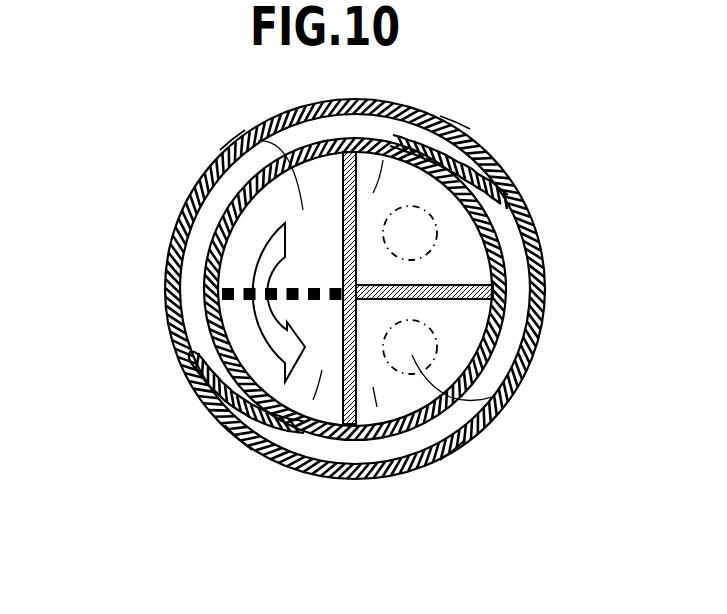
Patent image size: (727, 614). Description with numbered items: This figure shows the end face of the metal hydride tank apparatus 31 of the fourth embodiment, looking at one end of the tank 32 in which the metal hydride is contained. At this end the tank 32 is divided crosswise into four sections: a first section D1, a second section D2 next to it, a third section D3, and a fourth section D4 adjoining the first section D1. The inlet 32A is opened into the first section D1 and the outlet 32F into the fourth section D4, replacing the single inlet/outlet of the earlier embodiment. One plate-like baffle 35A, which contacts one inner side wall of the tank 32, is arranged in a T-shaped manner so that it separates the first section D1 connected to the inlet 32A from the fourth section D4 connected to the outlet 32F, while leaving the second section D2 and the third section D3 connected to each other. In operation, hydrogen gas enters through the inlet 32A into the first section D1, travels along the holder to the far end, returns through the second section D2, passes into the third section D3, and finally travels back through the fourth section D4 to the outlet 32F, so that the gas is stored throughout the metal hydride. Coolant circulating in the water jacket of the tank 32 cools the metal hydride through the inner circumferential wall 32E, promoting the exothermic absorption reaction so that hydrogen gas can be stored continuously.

The metal hydride tank apparatus 31 is at (194, 186).
The tank 32 is at (167, 310).
The inlet 32A is at (473, 188).
The inner circumferential wall 32E is at (192, 383).
The outlet 32F is at (494, 397).
The plate-like baffle 35A is at (446, 283).
The first section D1 is at (453, 130).
The second section D2 is at (233, 145).
The third section D3 is at (240, 437).
The fourth section D4 is at (450, 447).